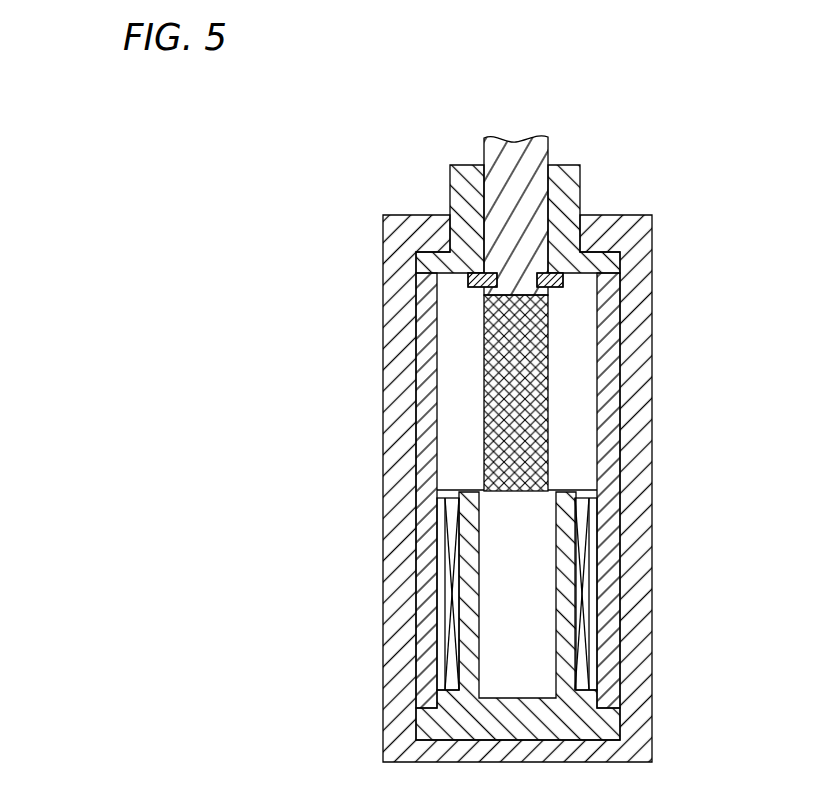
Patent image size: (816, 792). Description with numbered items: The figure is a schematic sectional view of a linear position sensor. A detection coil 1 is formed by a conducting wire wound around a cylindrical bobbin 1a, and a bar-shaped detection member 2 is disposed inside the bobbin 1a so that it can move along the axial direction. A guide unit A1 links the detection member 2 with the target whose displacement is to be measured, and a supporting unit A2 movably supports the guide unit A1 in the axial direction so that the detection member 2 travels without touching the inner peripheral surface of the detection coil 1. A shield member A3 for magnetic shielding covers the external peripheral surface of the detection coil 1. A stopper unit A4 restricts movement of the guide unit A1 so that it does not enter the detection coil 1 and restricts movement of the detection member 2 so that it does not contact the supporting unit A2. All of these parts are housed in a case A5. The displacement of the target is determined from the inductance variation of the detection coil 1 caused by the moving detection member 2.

The detection coil 1 is at (590, 585).
The bobbin 1a is at (567, 616).
The detection member 2 is at (525, 373).
The guide unit A1 is at (515, 165).
The supporting unit A2 is at (565, 190).
The shield member A3 is at (608, 398).
The stopper unit A4 is at (517, 273).
The case A5 is at (400, 349).